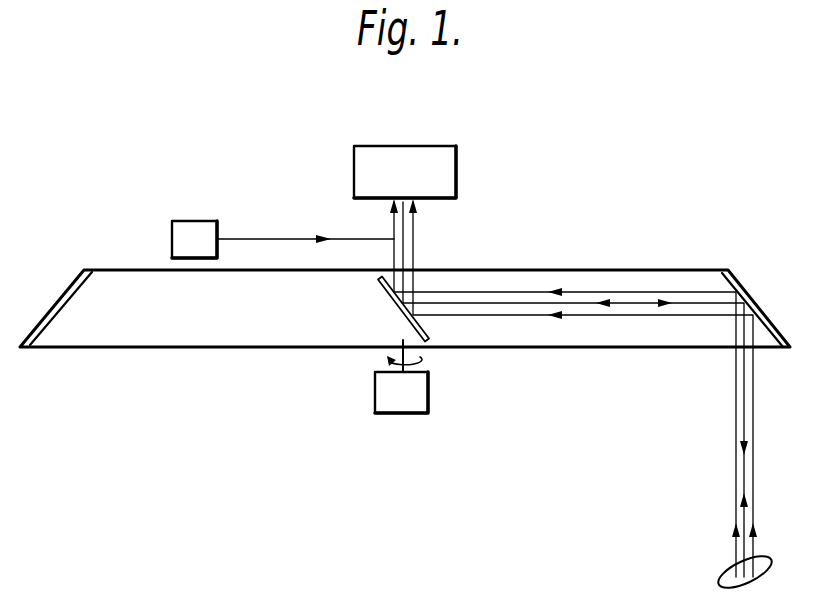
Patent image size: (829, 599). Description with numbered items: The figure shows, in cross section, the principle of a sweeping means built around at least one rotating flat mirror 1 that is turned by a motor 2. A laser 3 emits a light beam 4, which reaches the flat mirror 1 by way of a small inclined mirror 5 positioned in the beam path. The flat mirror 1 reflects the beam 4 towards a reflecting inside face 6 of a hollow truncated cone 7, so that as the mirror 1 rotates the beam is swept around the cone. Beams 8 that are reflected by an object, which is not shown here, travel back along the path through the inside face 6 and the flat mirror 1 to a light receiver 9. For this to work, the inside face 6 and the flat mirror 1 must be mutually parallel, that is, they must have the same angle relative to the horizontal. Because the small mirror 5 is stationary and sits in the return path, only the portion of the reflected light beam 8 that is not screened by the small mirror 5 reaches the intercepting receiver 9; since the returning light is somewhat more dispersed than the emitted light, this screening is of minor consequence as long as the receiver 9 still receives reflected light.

The rotating flat mirror 1 is at (385, 288).
The motor 2 is at (395, 402).
The laser 3 is at (197, 238).
The light beam 4 is at (283, 238).
The small inclined mirror 5 is at (403, 241).
The reflecting inside face 6 is at (722, 286).
The hollow truncated cone 7 is at (748, 293).
The reflected beams 8 is at (723, 570).
The light receiver 9 is at (440, 163).